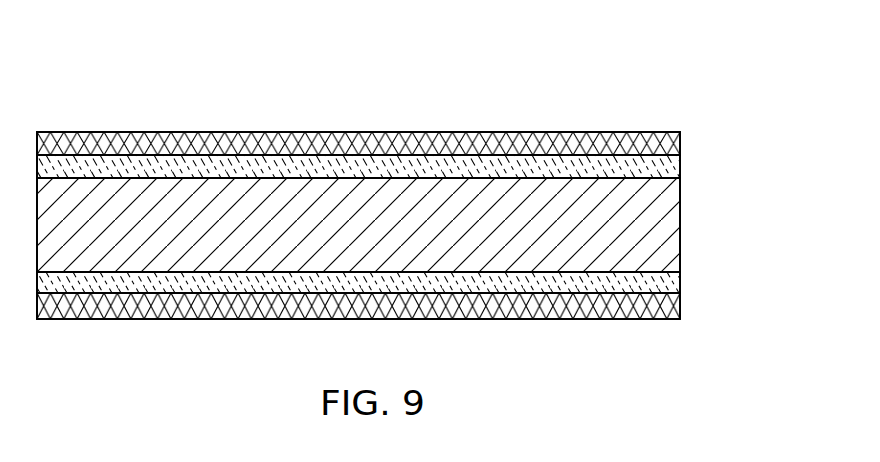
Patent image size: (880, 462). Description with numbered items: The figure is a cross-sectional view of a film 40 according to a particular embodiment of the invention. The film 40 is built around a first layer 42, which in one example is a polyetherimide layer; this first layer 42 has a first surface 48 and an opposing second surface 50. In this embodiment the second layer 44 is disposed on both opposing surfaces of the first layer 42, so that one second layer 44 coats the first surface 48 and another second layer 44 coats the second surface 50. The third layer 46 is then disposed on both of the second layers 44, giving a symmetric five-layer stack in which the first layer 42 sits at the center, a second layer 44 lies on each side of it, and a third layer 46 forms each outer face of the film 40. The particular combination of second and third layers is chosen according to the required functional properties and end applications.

The film 40 is at (637, 60).
The first layer 42 is at (680, 233).
The second layer 44 is at (680, 165).
The third layer 46 is at (680, 144).
The first surface 48 is at (236, 183).
The second surface 50 is at (490, 272).